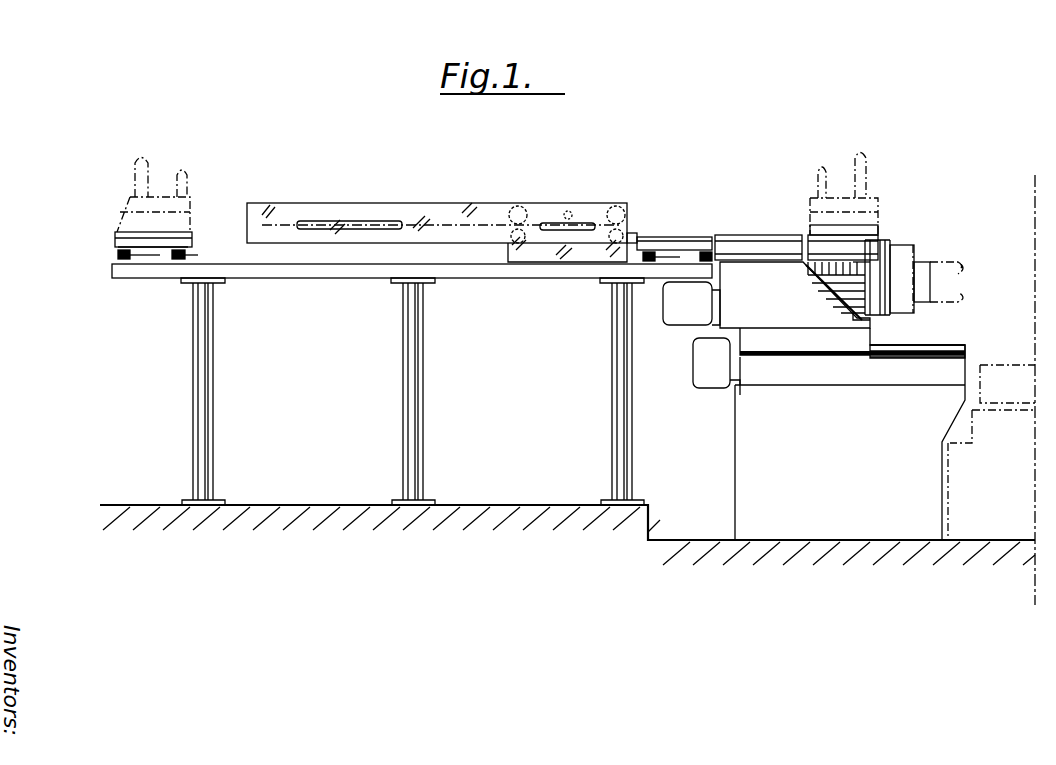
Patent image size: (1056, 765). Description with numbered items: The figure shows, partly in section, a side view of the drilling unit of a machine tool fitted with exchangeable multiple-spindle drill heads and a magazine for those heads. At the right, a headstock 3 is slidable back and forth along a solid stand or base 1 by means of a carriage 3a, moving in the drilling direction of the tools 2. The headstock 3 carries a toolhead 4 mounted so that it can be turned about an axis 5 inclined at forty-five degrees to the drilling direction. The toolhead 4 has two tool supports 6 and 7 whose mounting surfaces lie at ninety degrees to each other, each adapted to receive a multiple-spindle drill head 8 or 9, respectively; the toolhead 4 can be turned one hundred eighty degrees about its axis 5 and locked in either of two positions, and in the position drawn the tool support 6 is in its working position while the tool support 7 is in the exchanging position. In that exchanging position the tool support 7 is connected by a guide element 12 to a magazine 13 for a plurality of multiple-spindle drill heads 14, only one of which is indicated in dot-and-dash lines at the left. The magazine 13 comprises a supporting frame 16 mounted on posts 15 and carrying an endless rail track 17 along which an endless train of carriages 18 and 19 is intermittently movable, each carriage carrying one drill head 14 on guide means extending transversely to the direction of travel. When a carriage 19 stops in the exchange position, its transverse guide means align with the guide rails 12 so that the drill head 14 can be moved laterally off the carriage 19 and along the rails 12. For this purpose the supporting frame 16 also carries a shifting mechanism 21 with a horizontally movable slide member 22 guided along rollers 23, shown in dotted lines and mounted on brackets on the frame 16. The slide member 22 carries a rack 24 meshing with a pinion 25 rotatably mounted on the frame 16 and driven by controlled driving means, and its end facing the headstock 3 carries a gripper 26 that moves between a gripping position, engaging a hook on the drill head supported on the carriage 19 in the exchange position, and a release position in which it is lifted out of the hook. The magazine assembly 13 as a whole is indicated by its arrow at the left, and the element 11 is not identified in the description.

The stand or base 1 is at (735, 418).
The tools 2 is at (966, 300).
The headstock 3 is at (775, 309).
The carriage 3a is at (818, 350).
The toolhead 4 is at (828, 280).
The axis 5 is at (868, 252).
The tool support 6 is at (906, 268).
The tool support 7 is at (862, 262).
The multiple-spindle drill head 8 is at (925, 285).
The multiple-spindle drill head 9 is at (862, 218).
The gripper 11 is at (860, 172).
The guide element 12 is at (760, 234).
The magazine 13 is at (118, 327).
The multiple-spindle drill head 14 is at (138, 214).
The posts 15 is at (215, 410).
The supporting frame 16 is at (338, 280).
The endless rail track 17 is at (122, 262).
The carriage 18 is at (178, 241).
The carriage 19 is at (690, 240).
The shifting mechanism 21 is at (388, 160).
The slide member 22 is at (458, 208).
The rollers 23 is at (526, 212).
The rack 24 is at (325, 222).
The pinion 25 is at (569, 212).
The gripper 26 is at (636, 236).